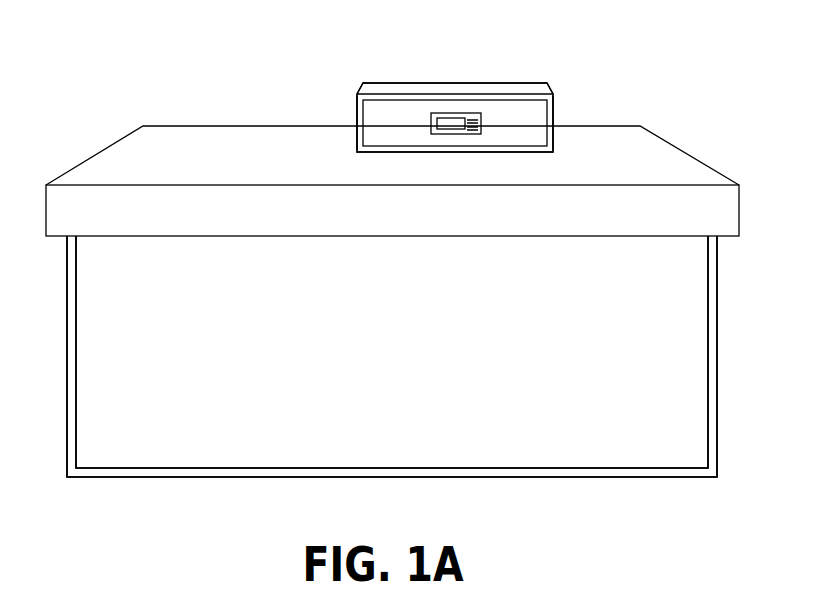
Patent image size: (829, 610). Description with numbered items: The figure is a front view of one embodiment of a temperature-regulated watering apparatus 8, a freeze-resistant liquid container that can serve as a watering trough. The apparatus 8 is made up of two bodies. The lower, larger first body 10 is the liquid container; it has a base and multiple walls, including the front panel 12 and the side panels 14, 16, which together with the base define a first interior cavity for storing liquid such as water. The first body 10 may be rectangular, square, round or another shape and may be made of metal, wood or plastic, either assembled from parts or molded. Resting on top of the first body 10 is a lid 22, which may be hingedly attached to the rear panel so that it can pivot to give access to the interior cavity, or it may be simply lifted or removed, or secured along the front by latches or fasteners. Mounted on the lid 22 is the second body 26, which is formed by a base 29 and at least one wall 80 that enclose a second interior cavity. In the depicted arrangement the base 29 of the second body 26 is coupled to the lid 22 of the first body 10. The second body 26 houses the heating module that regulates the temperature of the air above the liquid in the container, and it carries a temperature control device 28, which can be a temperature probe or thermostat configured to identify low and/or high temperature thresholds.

The temperature-regulated watering apparatus 8 is at (68, 438).
The first body 10 is at (600, 484).
The front panel 12 is at (680, 400).
The side panel 14 is at (67, 337).
The side panel 16 is at (718, 308).
The lid 22 is at (112, 173).
The second body 26 is at (400, 74).
The temperature control device 28 is at (500, 90).
The base 29 is at (452, 148).
The wall 80 is at (357, 113).